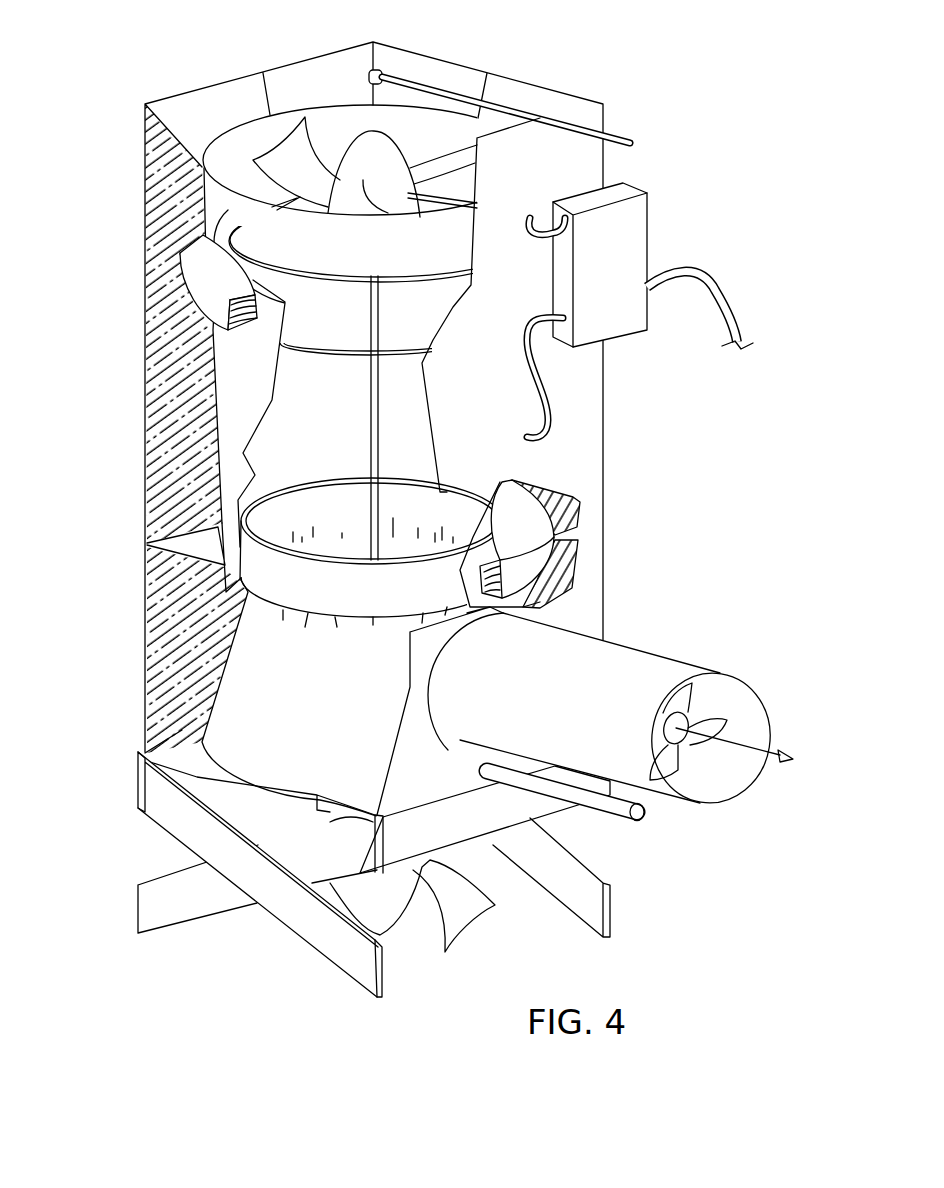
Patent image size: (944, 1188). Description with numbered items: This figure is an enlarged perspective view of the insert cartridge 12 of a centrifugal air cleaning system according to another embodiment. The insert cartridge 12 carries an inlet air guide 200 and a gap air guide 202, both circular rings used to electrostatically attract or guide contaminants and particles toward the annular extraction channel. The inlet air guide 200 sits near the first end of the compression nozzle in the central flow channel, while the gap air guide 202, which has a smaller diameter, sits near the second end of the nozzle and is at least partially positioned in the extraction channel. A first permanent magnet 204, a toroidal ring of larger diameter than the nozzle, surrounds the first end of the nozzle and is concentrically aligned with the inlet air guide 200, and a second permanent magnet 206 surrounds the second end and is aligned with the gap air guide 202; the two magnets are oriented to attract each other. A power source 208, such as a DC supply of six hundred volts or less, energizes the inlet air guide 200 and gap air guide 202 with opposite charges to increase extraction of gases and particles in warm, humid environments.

The insert cartridge 12 is at (660, 70).
The inlet air guide 200 is at (443, 322).
The gap air guide 202 is at (282, 594).
The first permanent magnet 204 is at (156, 282).
The second permanent magnet 206 is at (577, 541).
The power source 208 is at (667, 247).